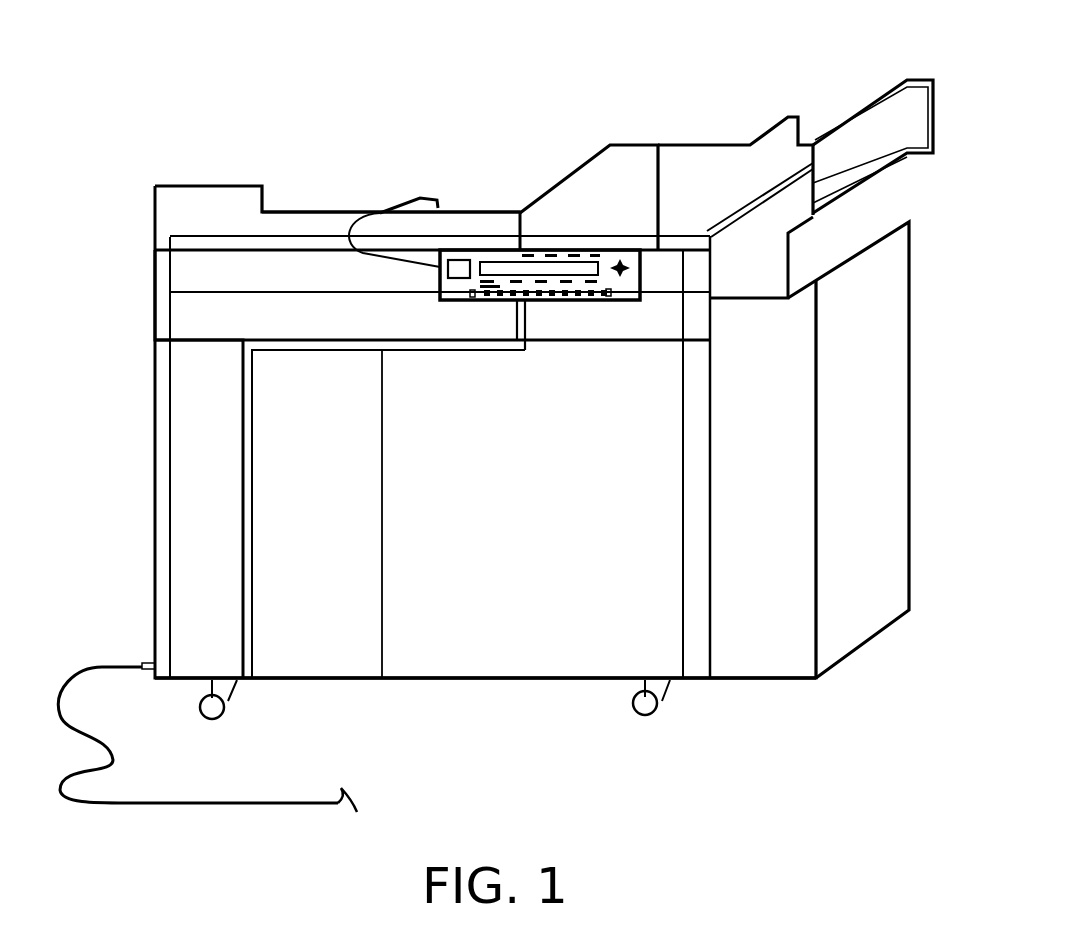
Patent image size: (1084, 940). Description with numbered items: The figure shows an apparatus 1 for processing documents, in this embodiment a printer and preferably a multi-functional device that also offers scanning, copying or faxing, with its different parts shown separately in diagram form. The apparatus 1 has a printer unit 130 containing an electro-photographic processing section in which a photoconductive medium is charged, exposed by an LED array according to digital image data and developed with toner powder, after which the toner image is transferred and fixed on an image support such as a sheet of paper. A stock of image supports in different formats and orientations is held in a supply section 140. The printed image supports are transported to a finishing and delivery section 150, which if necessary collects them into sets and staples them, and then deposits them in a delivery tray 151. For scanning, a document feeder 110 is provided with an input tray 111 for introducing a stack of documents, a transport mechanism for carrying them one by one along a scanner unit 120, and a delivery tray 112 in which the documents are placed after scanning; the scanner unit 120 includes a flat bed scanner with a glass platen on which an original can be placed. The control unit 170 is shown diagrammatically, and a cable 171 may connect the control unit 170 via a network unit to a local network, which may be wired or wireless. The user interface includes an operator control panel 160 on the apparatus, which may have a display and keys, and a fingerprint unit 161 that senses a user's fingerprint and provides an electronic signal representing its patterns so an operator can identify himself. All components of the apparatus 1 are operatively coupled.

The apparatus for processing documents 1 is at (450, 104).
The document feeder 110 is at (200, 186).
The input tray 111 is at (293, 212).
The delivery tray 112 is at (572, 175).
The scanner unit 120 is at (155, 320).
The printer unit 130 is at (348, 683).
The supply section 140 is at (892, 630).
The finishing and delivery section 150 is at (685, 145).
The delivery tray 151 is at (880, 92).
The operator control panel 160 is at (468, 252).
The fingerprint unit 161 is at (362, 210).
The control unit 170 is at (155, 553).
The cable 171 is at (283, 800).